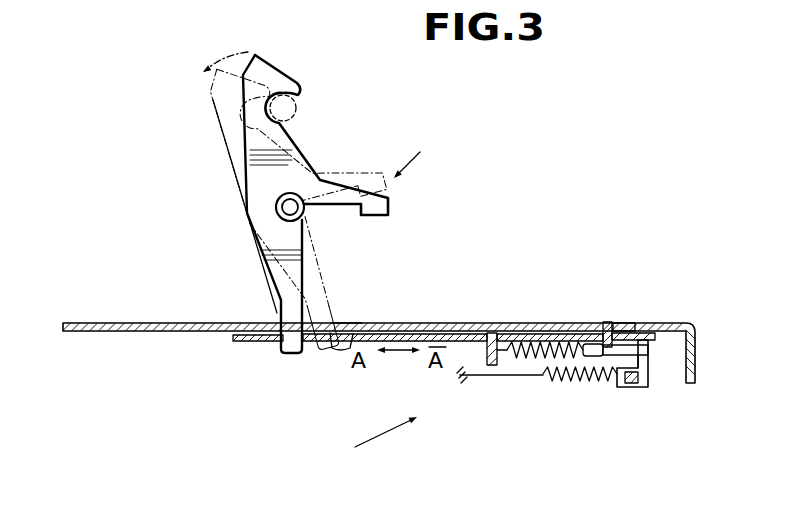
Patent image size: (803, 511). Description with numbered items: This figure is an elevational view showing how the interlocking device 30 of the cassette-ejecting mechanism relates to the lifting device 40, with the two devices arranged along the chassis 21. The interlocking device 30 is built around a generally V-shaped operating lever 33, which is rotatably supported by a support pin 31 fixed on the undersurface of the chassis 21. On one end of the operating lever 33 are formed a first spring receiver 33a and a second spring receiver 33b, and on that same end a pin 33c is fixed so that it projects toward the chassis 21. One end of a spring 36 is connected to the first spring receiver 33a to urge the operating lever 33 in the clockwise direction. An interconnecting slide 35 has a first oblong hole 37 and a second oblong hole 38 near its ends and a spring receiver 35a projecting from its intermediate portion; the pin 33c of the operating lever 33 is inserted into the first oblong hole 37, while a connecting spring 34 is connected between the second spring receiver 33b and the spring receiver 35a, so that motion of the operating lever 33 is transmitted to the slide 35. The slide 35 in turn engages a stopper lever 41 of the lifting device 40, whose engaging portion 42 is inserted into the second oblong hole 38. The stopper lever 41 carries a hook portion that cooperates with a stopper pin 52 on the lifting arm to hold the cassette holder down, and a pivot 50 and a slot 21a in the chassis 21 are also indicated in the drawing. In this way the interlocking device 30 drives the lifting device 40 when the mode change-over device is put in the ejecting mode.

The chassis 21 is at (211, 324).
The slot in base plate 21a is at (347, 323).
The interlocking device 30 is at (353, 467).
The support pin 31 is at (632, 324).
The operating lever 33 is at (652, 352).
The first spring receiver 33a is at (633, 388).
The second spring receiver 33b is at (592, 357).
The pin 33c is at (607, 322).
The connecting spring 34 is at (523, 360).
The interconnecting slide 35 is at (407, 337).
The spring receiver 35a is at (488, 366).
The spring 36 is at (558, 383).
The first oblong hole 37 is at (644, 333).
The second oblong hole 38 is at (347, 347).
The lifting device 40 is at (435, 145).
The stopper lever 41 is at (257, 215).
The engaging portion 42 is at (291, 354).
The pivot pin 50 is at (292, 193).
The stopper pin 52 is at (297, 108).